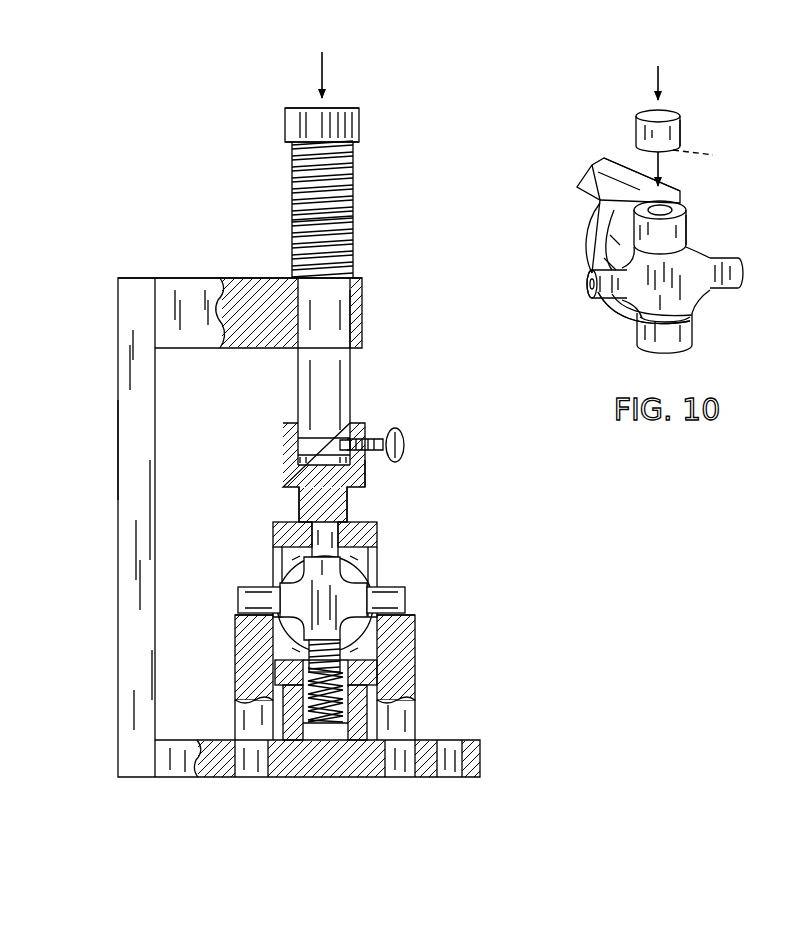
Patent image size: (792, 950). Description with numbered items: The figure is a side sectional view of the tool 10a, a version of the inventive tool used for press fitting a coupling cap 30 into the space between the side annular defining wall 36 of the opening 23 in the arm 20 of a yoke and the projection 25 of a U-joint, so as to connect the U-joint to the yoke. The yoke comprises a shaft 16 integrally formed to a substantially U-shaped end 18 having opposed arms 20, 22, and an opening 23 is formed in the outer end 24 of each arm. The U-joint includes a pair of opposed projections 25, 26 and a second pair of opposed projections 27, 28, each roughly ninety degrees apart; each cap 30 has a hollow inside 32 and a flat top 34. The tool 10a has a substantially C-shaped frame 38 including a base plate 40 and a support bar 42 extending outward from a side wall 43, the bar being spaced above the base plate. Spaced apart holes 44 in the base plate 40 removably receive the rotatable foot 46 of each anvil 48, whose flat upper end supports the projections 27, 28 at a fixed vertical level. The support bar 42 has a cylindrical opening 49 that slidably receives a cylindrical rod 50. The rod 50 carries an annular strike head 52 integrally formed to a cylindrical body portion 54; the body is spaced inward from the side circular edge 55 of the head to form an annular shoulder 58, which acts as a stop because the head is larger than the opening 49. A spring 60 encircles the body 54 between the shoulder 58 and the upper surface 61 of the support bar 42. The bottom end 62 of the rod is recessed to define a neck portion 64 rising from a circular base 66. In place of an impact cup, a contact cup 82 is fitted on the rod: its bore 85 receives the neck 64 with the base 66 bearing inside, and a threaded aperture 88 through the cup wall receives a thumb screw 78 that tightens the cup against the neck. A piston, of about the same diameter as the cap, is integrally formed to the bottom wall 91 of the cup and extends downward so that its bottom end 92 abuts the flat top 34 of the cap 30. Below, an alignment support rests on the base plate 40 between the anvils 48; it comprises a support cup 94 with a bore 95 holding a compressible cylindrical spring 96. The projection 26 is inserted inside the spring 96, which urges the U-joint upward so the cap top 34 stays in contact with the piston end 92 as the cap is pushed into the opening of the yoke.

In FIG. 9, the tool 10a is at (252, 142).
In FIG. 10, the shaft 16 is at (594, 227).
In FIG. 10, the U shaped end 18 is at (590, 233).
In FIG. 10, the arm 20 is at (577, 190).
In FIG. 10, the arm 22 is at (620, 316).
In FIG. 10, the opening 23 is at (683, 213).
In FIG. 10, the outer end 24 is at (687, 228).
In FIG. 9, the projection 25 is at (338, 533).
In FIG. 10, the projection 25 is at (703, 208).
In FIG. 9, the projection 26 is at (345, 650).
In FIG. 10, the projection 26 is at (680, 323).
In FIG. 9, the projection 27 is at (400, 596).
In FIG. 10, the projection 27 is at (735, 272).
In FIG. 9, the projection 28 is at (245, 595).
In FIG. 10, the projection 28 is at (592, 282).
In FIG. 9, the coupling cap 30 is at (338, 587).
In FIG. 10, the coupling cap 30 is at (648, 201).
In FIG. 10, the hollow inside 32 is at (708, 153).
In FIG. 9, the flat top 34 is at (348, 520).
In FIG. 10, the flat top 34 is at (652, 100).
In FIG. 10, the side annular defining wall 36 is at (683, 127).
In FIG. 9, the frame 38 is at (128, 345).
In FIG. 9, the base plate 40 is at (311, 777).
In FIG. 9, the support bar 42 is at (184, 332).
In FIG. 9, the side wall 43 is at (125, 446).
In FIG. 9, the holes 44 is at (268, 757).
In FIG. 9, the foot 46 is at (247, 757).
In FIG. 9, the anvil 48 is at (245, 713).
In FIG. 9, the cylindrical opening 49 is at (342, 320).
In FIG. 9, the rod 50 is at (325, 296).
In FIG. 9, the strike head 52 is at (323, 164).
In FIG. 9, the cylindrical body portion 54 is at (300, 235).
In FIG. 9, the side circular edge 55 is at (360, 126).
In FIG. 9, the annular shoulder 58 is at (355, 145).
In FIG. 9, the spring 60 is at (350, 210).
In FIG. 9, the upper surface 61 is at (172, 278).
In FIG. 9, the bottom end 62 is at (365, 470).
In FIG. 9, the neck portion 64 is at (298, 425).
In FIG. 9, the circular base 66 is at (310, 462).
In FIG. 9, the thumb screw 78 is at (398, 440).
In FIG. 9, the contact cup 82 is at (324, 445).
In FIG. 9, the bore 85 is at (300, 445).
In FIG. 9, the threaded aperture 88 is at (350, 445).
In FIG. 9, the bottom wall 91 is at (300, 505).
In FIG. 9, the bottom end 92 is at (300, 512).
In FIG. 9, the support cup 94 is at (365, 690).
In FIG. 9, the bore 95 is at (345, 668).
In FIG. 9, the spring 96 is at (322, 735).